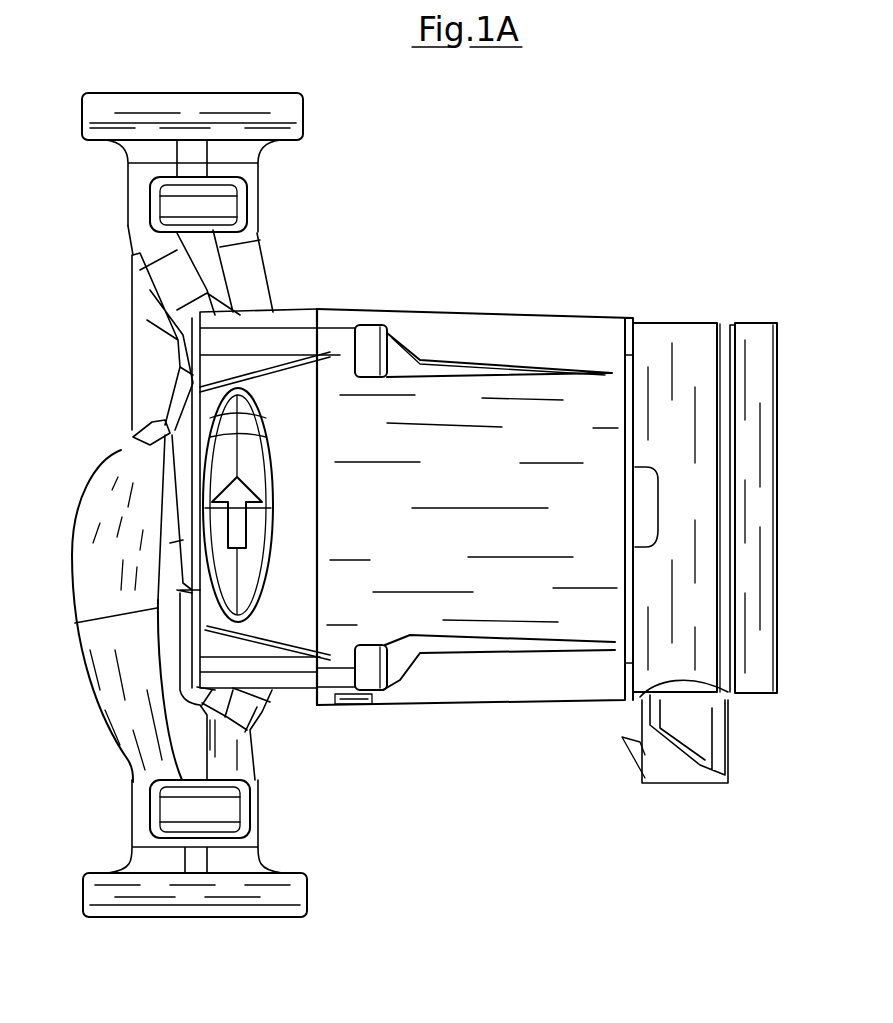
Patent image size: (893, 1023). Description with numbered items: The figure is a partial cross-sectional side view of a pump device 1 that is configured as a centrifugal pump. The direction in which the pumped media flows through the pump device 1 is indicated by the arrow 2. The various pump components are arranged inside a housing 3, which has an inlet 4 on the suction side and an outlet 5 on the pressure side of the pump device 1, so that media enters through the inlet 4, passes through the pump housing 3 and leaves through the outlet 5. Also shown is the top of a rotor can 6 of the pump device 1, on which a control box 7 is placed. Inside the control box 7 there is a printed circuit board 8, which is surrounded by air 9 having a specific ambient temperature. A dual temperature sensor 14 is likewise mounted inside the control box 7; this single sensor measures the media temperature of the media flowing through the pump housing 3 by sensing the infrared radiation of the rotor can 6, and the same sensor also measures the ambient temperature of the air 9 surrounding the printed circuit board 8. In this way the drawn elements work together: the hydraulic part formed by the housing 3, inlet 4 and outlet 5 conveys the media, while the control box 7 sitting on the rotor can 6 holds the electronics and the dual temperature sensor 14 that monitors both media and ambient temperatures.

The pump device 1 is at (557, 182).
The arrow 2 is at (193, 517).
The housing 3 is at (70, 550).
The inlet 4 is at (305, 883).
The outlet 5 is at (303, 115).
The top of a rotor can 6 is at (640, 545).
The control box 7 is at (723, 320).
The printed circuit board 8 is at (717, 382).
The air 9 is at (707, 493).
The dual temperature sensor 14 is at (485, 655).